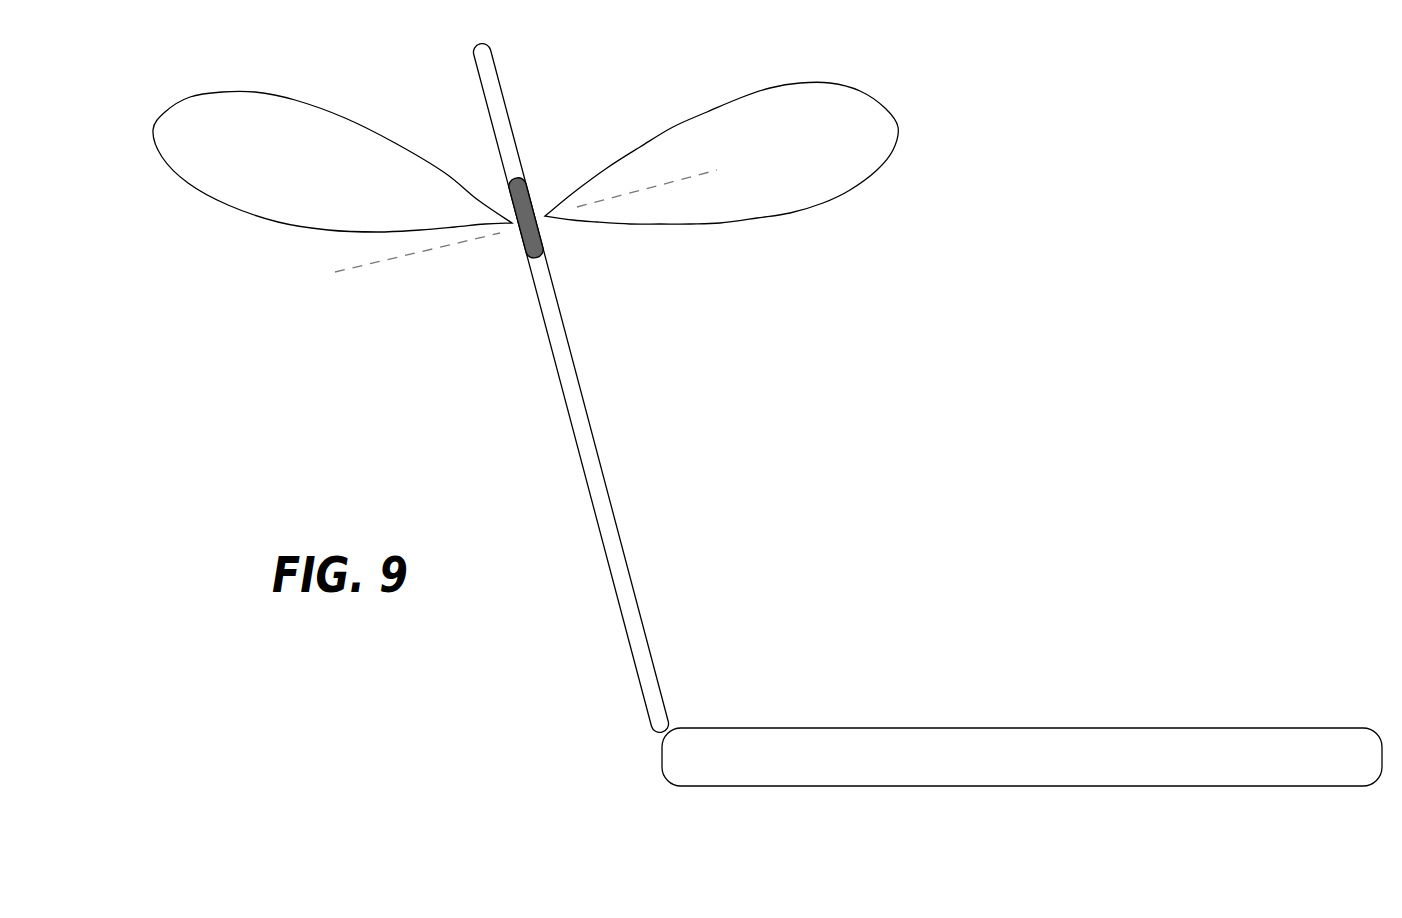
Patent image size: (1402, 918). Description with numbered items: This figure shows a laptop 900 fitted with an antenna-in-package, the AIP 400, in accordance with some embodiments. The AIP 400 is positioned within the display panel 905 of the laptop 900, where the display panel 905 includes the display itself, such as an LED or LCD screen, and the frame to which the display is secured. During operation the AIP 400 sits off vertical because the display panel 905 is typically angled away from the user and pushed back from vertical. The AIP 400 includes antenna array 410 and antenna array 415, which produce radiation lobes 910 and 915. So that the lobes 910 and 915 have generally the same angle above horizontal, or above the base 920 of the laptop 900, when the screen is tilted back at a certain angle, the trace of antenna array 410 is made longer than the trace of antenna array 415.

The laptop 900 is at (1202, 103).
The display panel 905 is at (498, 84).
The AIP 400 is at (532, 188).
The antenna array 410 is at (527, 245).
The antenna array 415 is at (541, 243).
The lobe 910 is at (229, 201).
The lobe 915 is at (733, 225).
The base 920 is at (748, 786).